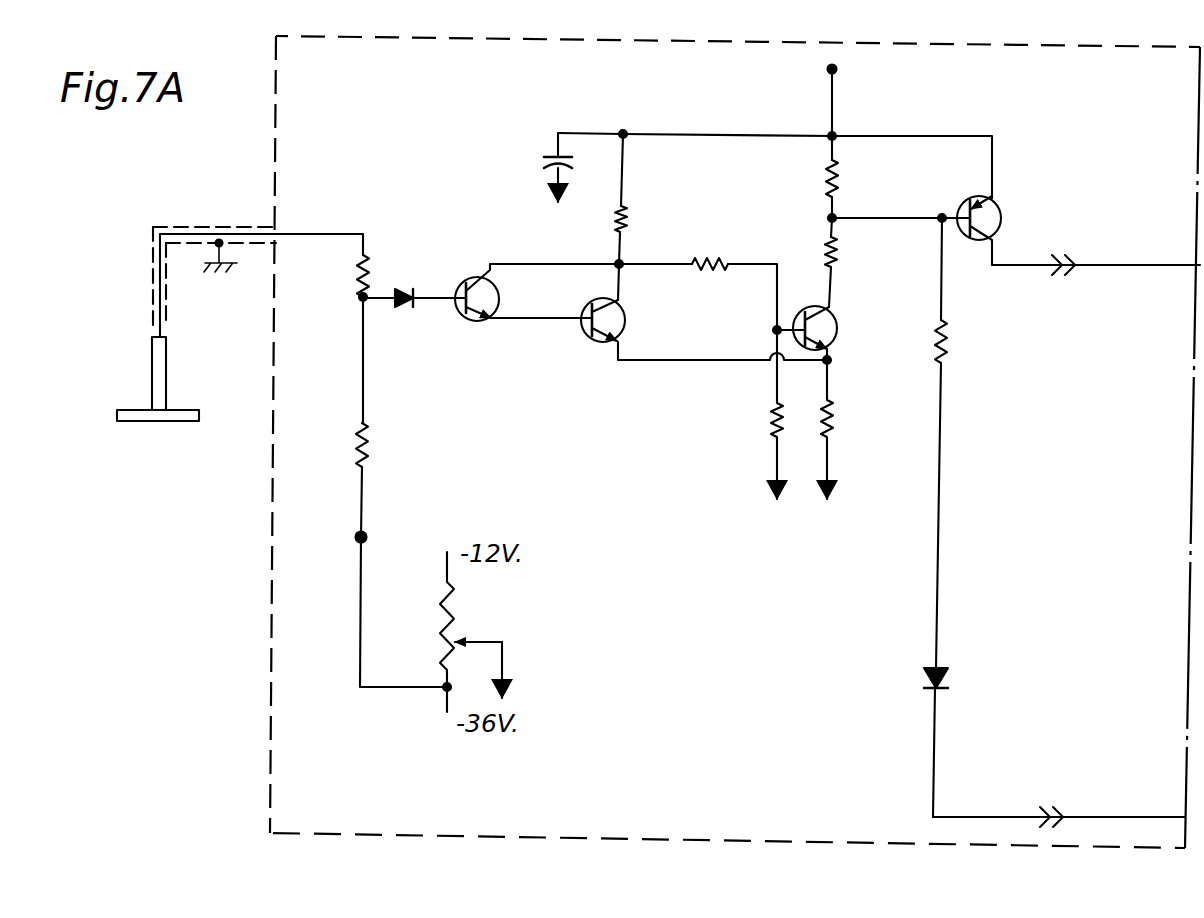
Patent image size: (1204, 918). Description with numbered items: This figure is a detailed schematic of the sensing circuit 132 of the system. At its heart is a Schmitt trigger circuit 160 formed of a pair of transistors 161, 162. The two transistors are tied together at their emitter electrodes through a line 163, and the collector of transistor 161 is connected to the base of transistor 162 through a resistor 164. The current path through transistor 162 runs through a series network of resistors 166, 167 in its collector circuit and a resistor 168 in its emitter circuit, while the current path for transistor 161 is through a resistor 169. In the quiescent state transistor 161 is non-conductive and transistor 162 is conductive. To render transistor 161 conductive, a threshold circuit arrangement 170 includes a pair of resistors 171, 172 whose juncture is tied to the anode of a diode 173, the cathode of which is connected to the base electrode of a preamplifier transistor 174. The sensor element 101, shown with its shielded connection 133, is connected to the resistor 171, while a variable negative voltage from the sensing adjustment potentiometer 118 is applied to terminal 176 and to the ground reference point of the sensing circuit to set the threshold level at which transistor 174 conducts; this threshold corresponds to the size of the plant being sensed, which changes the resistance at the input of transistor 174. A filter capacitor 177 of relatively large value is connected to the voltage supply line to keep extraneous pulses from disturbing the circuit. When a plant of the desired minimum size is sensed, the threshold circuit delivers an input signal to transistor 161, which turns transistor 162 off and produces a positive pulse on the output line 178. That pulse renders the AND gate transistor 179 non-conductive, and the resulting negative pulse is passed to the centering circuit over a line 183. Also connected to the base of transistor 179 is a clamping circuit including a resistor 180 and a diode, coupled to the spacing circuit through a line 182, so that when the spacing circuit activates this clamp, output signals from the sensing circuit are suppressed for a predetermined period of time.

The sensor element 101 is at (120, 408).
The sensing adjustment potentiometer 118 is at (458, 622).
The sensing circuit 132 is at (664, 127).
The shielded cable 133 is at (158, 283).
The Schmitt trigger circuit 160 is at (692, 374).
The transistor 161 is at (626, 310).
The transistor 162 is at (800, 312).
The line 163 is at (750, 334).
The resistor 164 is at (706, 260).
The resistor 166 is at (836, 178).
The resistor 167 is at (838, 258).
The resistor 168 is at (830, 378).
The resistor 169 is at (628, 213).
The threshold circuit arrangement 170 is at (391, 254).
The resistor 171 is at (360, 270).
The resistor 172 is at (370, 440).
The diode 173 is at (404, 308).
The preamplifier transistor 174 is at (474, 276).
The terminal 176 is at (364, 537).
The filter capacitor 177 is at (548, 157).
The output line 178 is at (920, 197).
The AND gate transistor 179 is at (978, 198).
The resistor 180 is at (950, 338).
The line 182 is at (1125, 785).
The line 183 is at (1062, 262).